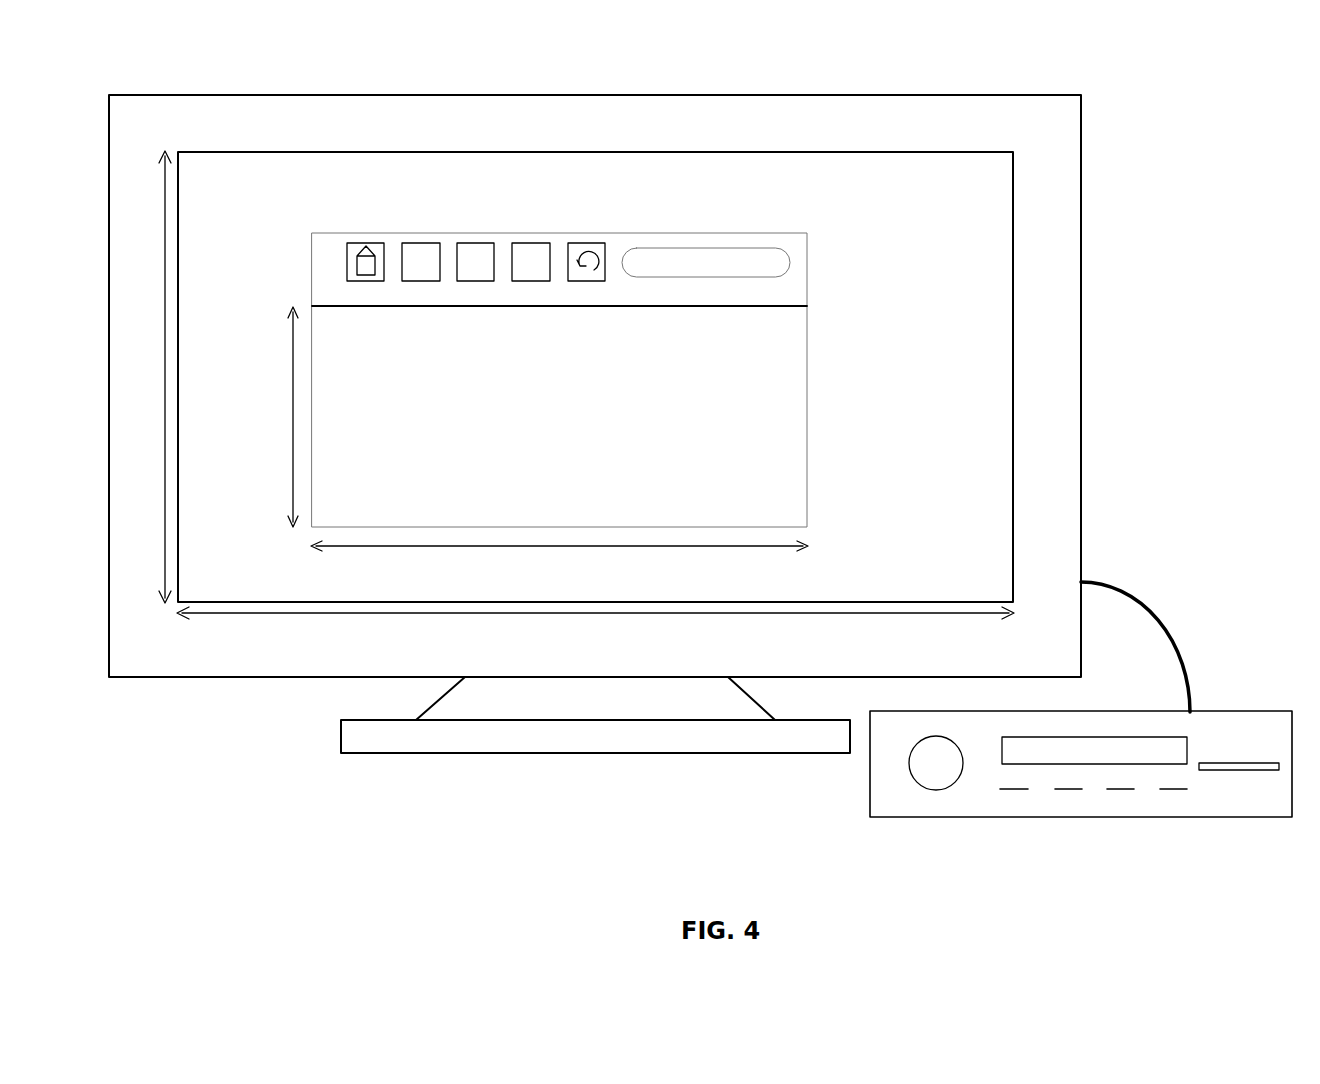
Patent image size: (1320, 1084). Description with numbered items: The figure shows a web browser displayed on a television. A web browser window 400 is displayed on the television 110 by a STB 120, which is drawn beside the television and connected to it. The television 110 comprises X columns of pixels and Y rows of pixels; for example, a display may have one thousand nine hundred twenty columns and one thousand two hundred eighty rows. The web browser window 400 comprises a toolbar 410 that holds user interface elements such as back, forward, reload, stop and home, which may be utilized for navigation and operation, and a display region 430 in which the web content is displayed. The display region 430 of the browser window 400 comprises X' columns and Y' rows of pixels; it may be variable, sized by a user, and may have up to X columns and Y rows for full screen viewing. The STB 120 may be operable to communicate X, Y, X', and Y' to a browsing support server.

The television 110 is at (1058, 83).
The STB 120 is at (1270, 699).
The web browser window 400 is at (561, 403).
The toolbar 410 is at (557, 303).
The display region 430 is at (557, 430).